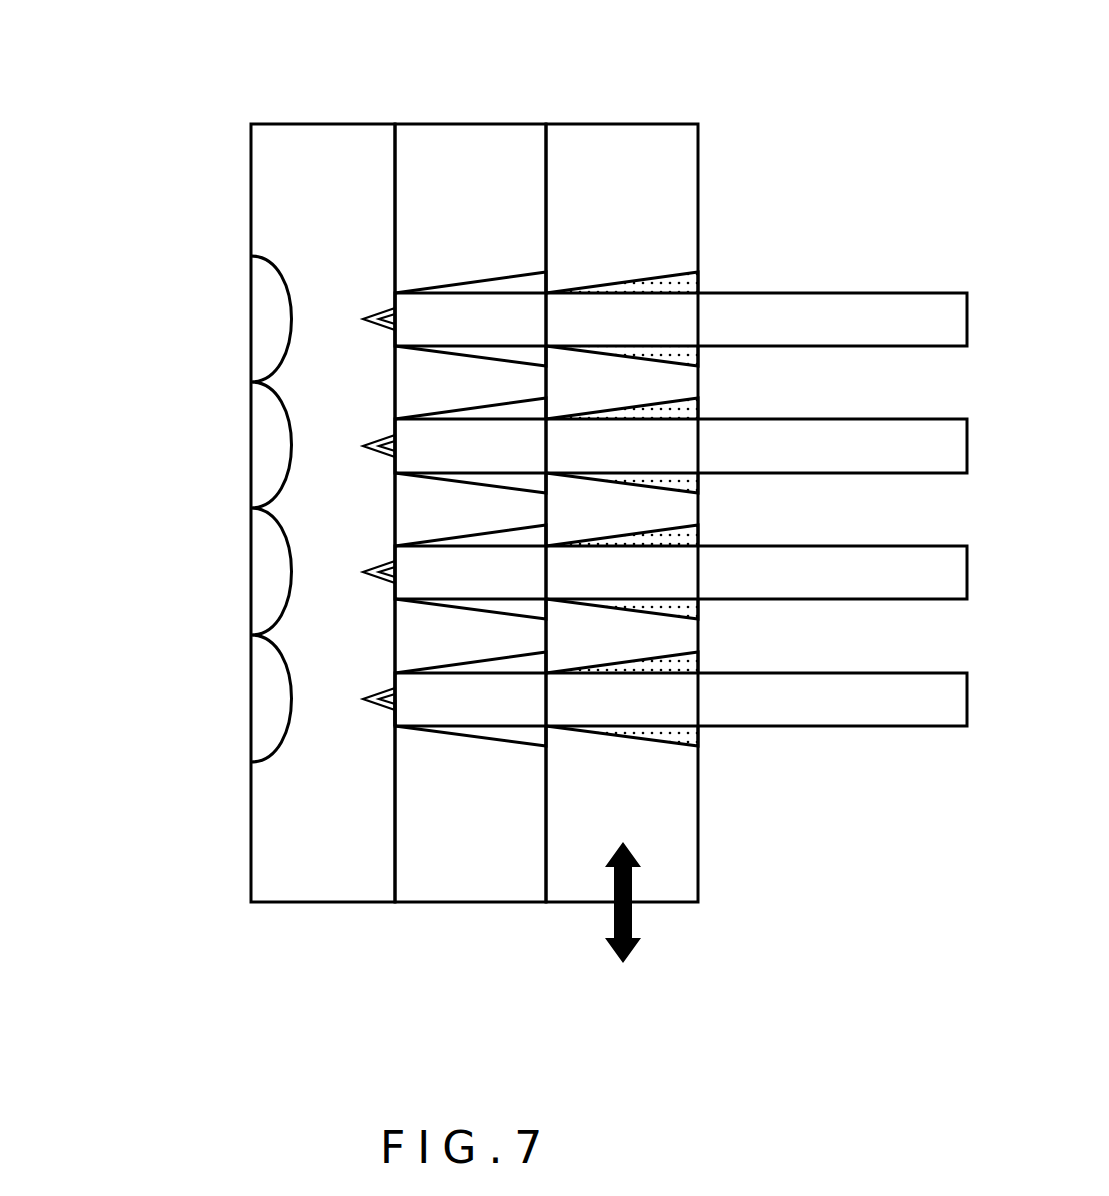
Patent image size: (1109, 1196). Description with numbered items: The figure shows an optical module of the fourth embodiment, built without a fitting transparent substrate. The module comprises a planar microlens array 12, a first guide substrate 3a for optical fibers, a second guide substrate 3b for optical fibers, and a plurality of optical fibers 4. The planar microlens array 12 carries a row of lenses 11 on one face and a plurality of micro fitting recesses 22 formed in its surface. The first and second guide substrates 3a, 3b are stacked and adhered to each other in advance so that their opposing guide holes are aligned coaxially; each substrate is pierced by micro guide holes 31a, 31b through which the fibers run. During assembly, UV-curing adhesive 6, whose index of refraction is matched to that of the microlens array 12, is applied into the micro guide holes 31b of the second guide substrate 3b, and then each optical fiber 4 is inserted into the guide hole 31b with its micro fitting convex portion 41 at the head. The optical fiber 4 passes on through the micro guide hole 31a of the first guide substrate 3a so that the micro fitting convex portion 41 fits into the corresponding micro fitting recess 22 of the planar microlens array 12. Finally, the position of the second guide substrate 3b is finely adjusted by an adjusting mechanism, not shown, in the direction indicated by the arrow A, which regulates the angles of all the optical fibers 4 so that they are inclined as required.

The planar microlens array 12 is at (304, 128).
The lens 11 is at (270, 322).
The micro fitting recess 22 is at (378, 315).
The first guide substrate 3a is at (452, 128).
The second guide substrate 3b is at (622, 128).
The micro guide hole 31a is at (513, 277).
The micro guide hole 31b is at (681, 275).
The UV-curing adhesive 6 is at (700, 283).
The optical fiber 4 is at (858, 292).
The micro fitting convex portion 41 is at (390, 712).
The arrow A is at (633, 915).